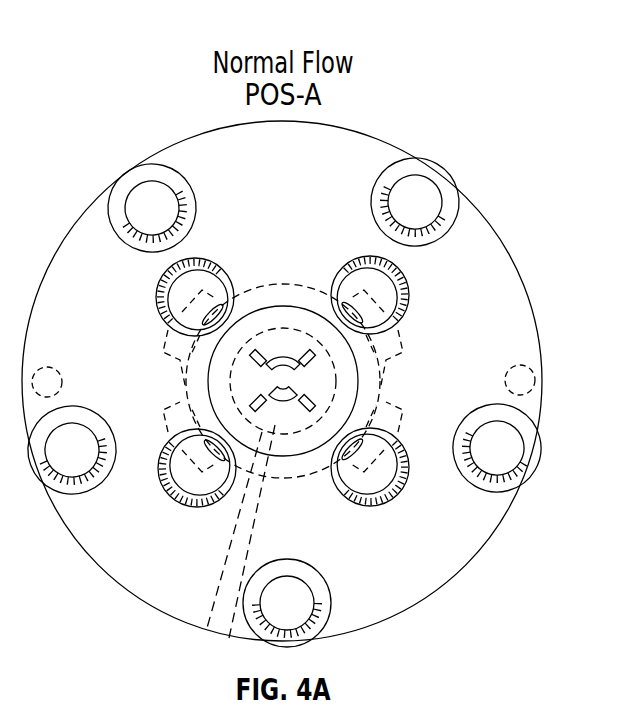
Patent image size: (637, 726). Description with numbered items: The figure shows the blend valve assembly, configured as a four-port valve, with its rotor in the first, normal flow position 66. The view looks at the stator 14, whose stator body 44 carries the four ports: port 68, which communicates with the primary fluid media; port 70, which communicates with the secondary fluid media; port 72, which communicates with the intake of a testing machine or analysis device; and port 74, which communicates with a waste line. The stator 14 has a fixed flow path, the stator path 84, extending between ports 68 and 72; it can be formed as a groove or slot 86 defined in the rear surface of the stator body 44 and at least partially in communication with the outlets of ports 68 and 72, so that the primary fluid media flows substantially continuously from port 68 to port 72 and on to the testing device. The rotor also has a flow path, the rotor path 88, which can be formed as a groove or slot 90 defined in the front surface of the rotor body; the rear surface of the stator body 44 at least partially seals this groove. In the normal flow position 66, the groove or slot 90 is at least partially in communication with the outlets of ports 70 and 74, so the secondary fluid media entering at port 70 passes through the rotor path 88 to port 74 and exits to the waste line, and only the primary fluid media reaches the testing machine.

The stator 14 is at (140, 148).
The normal flow position 66 is at (481, 153).
The stator body 44 is at (486, 215).
The port 68 is at (404, 318).
The port 70 is at (162, 447).
The port 72 is at (209, 259).
The port 74 is at (366, 507).
The stator path 84 is at (285, 345).
The groove or slot 86 is at (273, 352).
The rotor path 88 is at (287, 427).
The groove or slot 90 is at (282, 388).